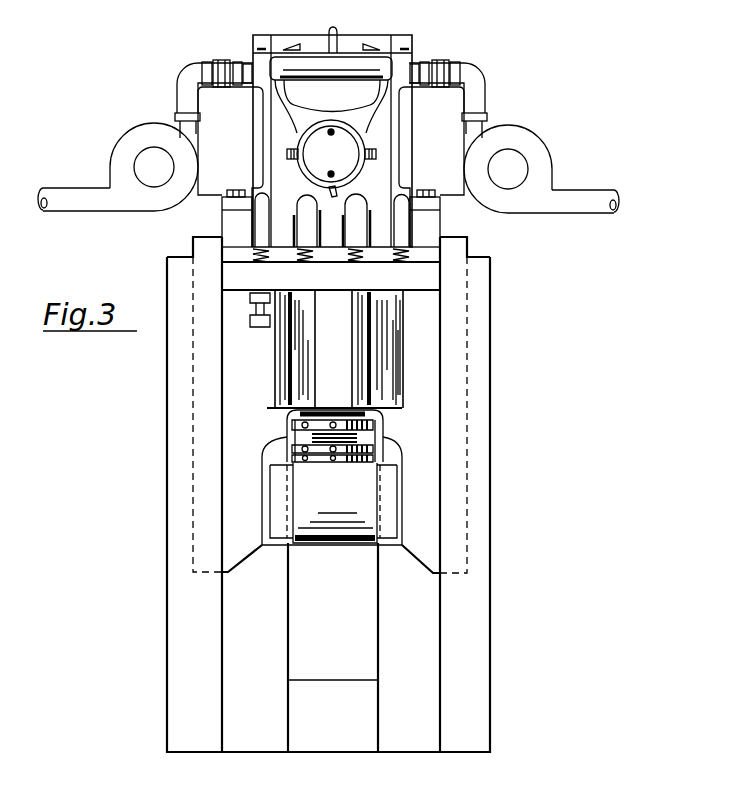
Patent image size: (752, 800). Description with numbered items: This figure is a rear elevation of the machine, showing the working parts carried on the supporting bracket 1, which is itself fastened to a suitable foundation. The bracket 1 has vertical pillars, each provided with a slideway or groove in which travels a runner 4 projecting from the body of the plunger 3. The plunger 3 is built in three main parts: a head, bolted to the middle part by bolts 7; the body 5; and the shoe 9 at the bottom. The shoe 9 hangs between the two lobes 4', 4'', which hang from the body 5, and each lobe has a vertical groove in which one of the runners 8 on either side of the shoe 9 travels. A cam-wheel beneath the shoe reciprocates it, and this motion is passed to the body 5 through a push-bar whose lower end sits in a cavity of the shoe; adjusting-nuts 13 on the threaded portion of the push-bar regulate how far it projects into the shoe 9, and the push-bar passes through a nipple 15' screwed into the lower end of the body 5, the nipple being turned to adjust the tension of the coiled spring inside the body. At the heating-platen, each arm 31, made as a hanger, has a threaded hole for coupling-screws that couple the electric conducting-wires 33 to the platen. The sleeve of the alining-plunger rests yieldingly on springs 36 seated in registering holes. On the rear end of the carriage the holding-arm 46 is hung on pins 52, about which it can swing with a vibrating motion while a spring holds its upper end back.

The bracket 1 is at (478, 398).
The plunger 3 is at (405, 305).
The runner 4 is at (481, 242).
The lobe 4' is at (253, 636).
The lower guide 4'' is at (453, 624).
The body 5 is at (412, 357).
The bolts 7 is at (233, 189).
The runners 8 is at (395, 463).
The shoe 9 is at (318, 493).
The adjusting-nuts 13 is at (318, 453).
The nipple 15' is at (309, 420).
The arm 31 is at (410, 253).
The electric conducting-wires 33 is at (123, 170).
The springs 36 is at (255, 256).
The holding-arm 46 is at (352, 122).
The pins 52 is at (378, 156).